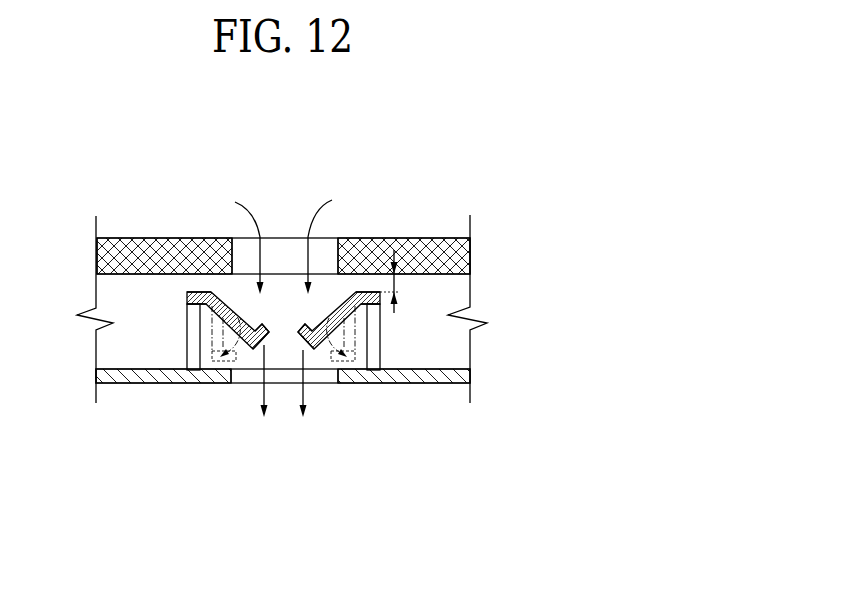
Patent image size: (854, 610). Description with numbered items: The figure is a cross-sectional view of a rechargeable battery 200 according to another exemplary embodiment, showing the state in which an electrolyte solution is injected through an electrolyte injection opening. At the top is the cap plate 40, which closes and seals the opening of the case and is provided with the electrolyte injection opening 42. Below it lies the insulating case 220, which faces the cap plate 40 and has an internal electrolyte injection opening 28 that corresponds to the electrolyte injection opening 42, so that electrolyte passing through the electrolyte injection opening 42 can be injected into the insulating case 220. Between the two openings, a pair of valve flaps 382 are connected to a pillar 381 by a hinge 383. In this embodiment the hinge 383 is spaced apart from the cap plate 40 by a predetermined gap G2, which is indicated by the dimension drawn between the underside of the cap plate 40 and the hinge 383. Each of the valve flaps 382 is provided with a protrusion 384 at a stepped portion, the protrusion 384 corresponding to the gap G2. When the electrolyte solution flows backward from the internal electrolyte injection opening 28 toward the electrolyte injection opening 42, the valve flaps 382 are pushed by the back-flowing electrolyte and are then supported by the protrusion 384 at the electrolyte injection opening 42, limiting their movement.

The rechargeable battery 200 is at (446, 194).
The cap plate 40 is at (455, 256).
The electrolyte injection opening 42 is at (286, 248).
The insulating case 220 is at (455, 374).
The internal electrolyte injection opening 28 is at (243, 378).
The pillar 381 is at (187, 327).
The valve flaps 382 is at (240, 310).
The hinge 383 is at (188, 297).
The protrusion 384 is at (265, 338).
The gap G2 is at (402, 281).